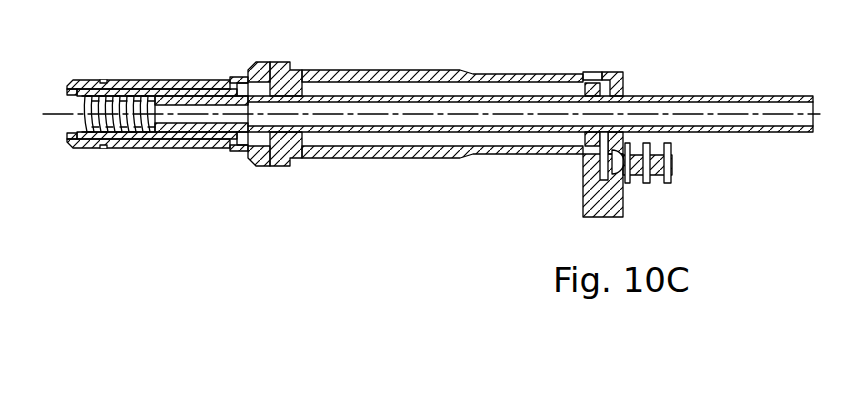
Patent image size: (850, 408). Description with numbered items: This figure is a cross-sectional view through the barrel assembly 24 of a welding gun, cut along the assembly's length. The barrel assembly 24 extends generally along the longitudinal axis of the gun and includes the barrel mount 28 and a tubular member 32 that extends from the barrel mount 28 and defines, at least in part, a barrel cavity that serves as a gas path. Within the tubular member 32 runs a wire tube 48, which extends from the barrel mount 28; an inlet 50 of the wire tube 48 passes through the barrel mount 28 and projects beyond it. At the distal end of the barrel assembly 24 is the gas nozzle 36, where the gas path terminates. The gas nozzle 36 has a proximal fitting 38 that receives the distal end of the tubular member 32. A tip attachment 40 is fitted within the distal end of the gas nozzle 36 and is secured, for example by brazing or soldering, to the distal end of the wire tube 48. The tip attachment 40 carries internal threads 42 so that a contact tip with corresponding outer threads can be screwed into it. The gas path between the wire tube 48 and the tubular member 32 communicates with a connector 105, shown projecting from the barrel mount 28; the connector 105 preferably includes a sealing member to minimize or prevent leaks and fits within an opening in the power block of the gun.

The barrel assembly 24 is at (505, 22).
The barrel mount 28 is at (625, 72).
The tubular member 32 is at (412, 68).
The gas nozzle 36 is at (184, 59).
The proximal fitting 38 is at (278, 46).
The tip attachment 40 is at (158, 95).
The internal threads 42 is at (131, 132).
The wire tube 48 is at (568, 97).
The inlet 50 is at (791, 73).
The connector 105 is at (672, 203).